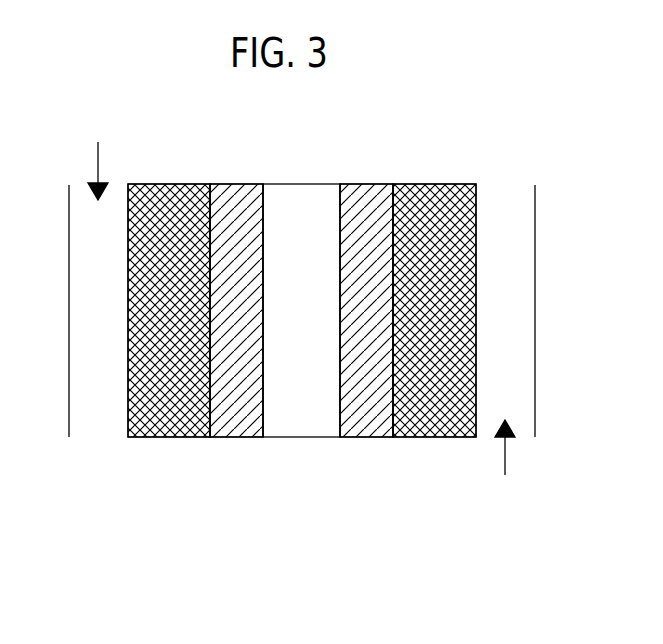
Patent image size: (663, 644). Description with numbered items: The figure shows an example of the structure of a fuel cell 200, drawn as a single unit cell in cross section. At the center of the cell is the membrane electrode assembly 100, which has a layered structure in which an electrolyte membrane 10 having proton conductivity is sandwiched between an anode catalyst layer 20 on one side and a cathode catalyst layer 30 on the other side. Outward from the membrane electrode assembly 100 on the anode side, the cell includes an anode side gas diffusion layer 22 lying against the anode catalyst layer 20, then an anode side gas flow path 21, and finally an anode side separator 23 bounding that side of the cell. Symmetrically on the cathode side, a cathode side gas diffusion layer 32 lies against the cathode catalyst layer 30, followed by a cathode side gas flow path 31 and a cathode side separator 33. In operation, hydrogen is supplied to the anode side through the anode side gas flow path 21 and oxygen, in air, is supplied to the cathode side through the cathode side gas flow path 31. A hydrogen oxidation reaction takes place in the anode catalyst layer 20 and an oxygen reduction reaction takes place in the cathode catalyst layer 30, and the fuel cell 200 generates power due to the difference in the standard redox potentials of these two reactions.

The fuel cell 200 is at (474, 146).
The membrane electrode assembly 100 is at (300, 393).
The electrolyte membrane 10 is at (300, 437).
The anode catalyst layer 20 is at (233, 437).
The cathode catalyst layer 30 is at (366, 363).
The anode side gas flow path 21 is at (105, 437).
The anode side gas diffusion layer 22 is at (168, 437).
The anode side separator 23 is at (69, 310).
The cathode side gas flow path 31 is at (523, 432).
The cathode side gas diffusion layer 32 is at (430, 437).
The cathode side separator 33 is at (536, 315).